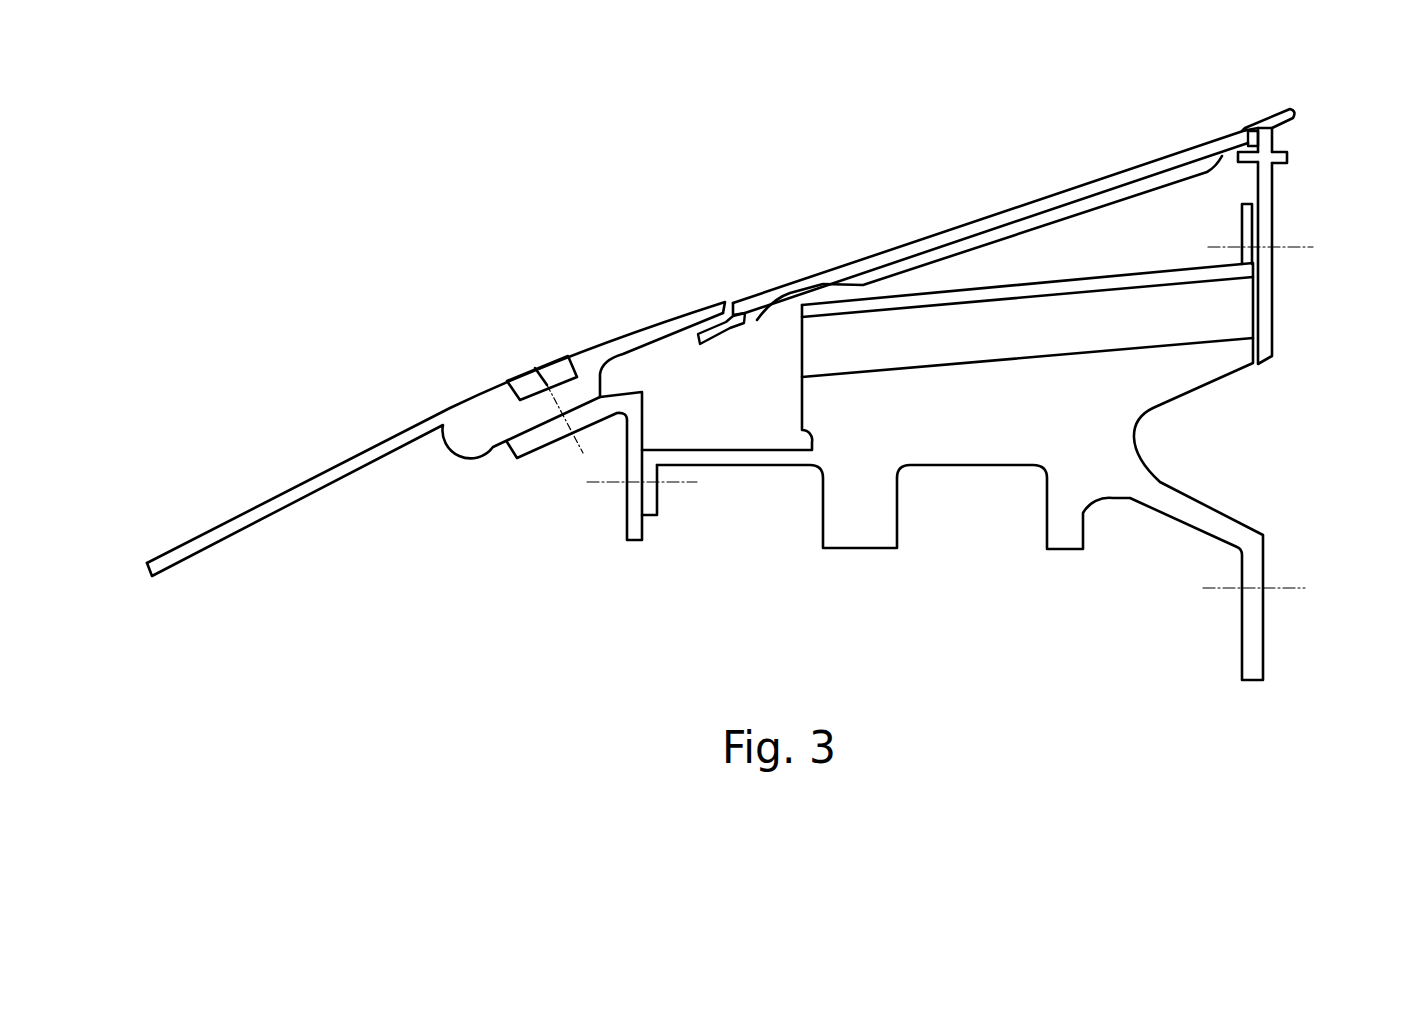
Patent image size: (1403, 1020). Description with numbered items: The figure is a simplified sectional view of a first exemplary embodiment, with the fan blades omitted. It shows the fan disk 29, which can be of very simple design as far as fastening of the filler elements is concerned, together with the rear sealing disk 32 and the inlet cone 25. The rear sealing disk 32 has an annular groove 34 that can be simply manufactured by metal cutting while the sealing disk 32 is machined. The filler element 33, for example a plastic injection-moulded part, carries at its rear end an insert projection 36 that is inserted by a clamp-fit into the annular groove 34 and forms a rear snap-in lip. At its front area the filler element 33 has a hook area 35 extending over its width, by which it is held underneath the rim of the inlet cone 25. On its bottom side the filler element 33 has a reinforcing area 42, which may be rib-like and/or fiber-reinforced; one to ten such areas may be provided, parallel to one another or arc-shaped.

The inlet cone 25 is at (268, 518).
The fan disk 29 is at (982, 465).
The rear sealing disk 32 is at (1274, 327).
The filler element 33 is at (948, 226).
The annular groove 34 is at (1262, 137).
The hook area 35 is at (722, 328).
The insert projection 36 is at (1236, 143).
The reinforcing area 42 is at (1128, 186).